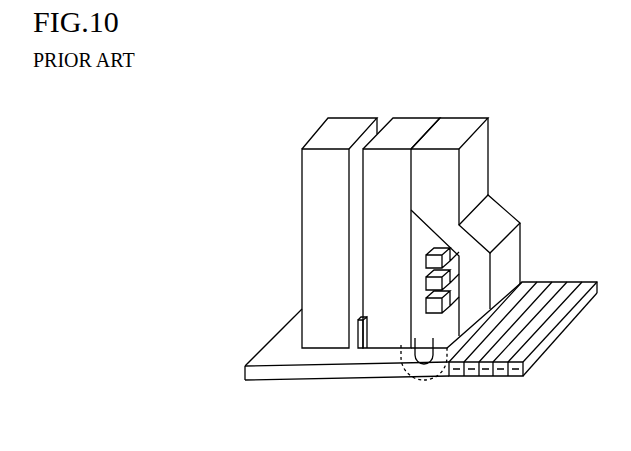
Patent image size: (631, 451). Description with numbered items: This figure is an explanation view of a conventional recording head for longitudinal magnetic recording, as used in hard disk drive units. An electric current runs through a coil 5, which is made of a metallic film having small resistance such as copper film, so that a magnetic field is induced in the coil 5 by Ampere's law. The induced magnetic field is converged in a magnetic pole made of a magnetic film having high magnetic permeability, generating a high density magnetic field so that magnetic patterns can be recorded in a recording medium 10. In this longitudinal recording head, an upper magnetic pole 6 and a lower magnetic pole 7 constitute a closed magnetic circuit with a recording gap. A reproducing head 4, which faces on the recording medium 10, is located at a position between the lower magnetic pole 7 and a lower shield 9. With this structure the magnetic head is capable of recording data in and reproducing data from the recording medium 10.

The reproducing head 4 is at (357, 348).
The coil 5 is at (458, 247).
The upper magnetic pole 6 is at (457, 125).
The lower magnetic pole 7 is at (400, 123).
The lower shield 9 is at (310, 184).
The recording medium 10 is at (303, 378).